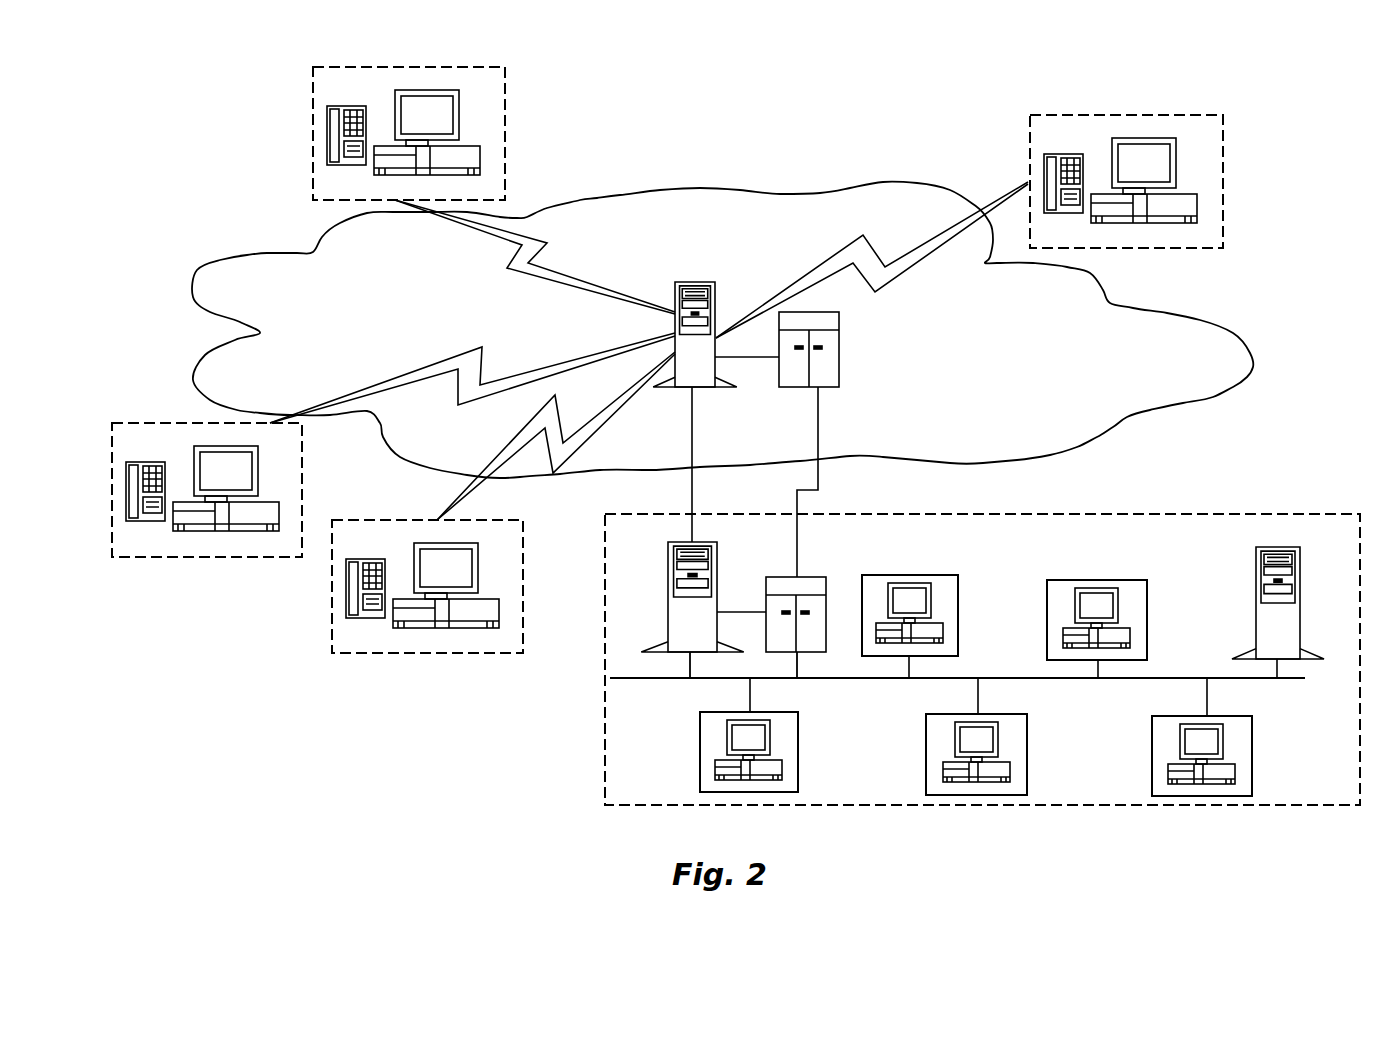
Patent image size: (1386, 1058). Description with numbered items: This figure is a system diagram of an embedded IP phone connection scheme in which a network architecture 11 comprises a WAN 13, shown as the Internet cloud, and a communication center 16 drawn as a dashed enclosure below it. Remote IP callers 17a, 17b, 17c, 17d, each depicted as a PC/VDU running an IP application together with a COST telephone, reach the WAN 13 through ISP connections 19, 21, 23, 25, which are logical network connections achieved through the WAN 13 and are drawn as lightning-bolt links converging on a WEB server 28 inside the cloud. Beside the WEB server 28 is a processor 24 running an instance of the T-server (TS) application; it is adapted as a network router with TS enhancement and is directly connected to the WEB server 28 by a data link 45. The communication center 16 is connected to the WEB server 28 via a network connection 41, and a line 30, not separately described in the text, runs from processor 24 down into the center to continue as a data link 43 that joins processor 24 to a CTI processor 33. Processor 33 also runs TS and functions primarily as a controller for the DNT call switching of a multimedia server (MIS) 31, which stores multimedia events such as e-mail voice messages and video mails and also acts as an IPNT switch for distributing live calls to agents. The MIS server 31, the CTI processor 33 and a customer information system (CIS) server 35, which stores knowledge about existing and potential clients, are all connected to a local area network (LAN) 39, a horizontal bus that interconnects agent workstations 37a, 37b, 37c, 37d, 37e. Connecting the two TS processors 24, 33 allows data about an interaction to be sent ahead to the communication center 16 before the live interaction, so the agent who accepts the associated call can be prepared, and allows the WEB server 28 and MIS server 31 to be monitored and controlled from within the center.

The network architecture 11 is at (698, 143).
The WAN 13 is at (257, 250).
The communication center 16 is at (1142, 508).
The remote IP caller 17a is at (313, 118).
The remote IP caller 17b is at (243, 558).
The remote IP caller 17c is at (460, 655).
The remote IP caller 17d is at (1130, 115).
The ISP connection 19 is at (505, 250).
The ISP connection 21 is at (438, 352).
The ISP connection 23 is at (810, 275).
The ISP connection 25 is at (495, 455).
The WEB server 28 is at (697, 282).
The processor 24 is at (839, 357).
The connection line 30 is at (818, 430).
The network connection 41 is at (694, 450).
The data link 43 is at (797, 523).
The data link 45 is at (745, 357).
The multimedia server (MIS) 31 is at (668, 598).
The CTI processor 33 is at (828, 590).
The customer information system (CIS) server 35 is at (1256, 612).
The agent workstation 37a is at (910, 575).
The agent workstation 37b is at (1090, 580).
The agent workstation 37c is at (700, 752).
The agent workstation 37d is at (926, 760).
The agent workstation 37e is at (1152, 762).
The local area network (LAN) 39 is at (965, 678).